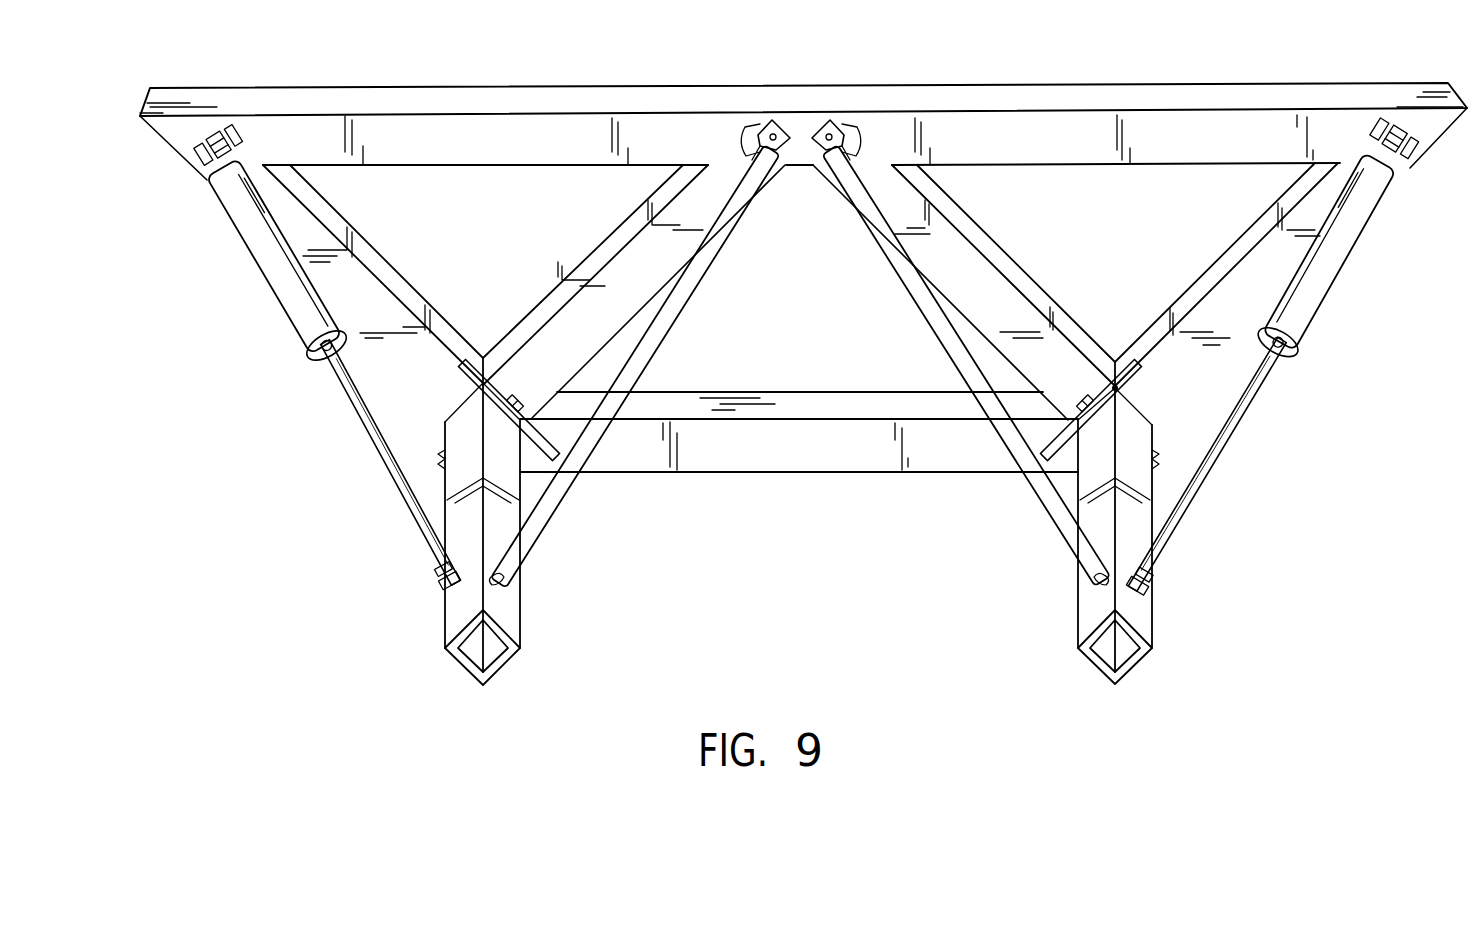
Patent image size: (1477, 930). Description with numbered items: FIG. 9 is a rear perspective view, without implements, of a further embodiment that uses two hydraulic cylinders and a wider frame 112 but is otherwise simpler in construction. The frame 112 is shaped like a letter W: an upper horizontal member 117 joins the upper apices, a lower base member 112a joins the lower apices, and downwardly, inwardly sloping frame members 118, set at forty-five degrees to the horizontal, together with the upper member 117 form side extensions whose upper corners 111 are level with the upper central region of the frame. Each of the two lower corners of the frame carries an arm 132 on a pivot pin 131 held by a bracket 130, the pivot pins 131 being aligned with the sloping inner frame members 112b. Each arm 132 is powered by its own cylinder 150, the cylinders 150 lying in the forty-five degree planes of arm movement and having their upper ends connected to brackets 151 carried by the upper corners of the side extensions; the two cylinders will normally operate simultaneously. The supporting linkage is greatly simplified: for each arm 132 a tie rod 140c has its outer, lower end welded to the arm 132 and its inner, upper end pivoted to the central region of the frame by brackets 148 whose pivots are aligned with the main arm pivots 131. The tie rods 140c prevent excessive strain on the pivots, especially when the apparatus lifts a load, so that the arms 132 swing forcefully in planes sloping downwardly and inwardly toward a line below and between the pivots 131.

The frame end 111 is at (170, 90).
The frame 112 is at (449, 86).
The base member 112a is at (767, 455).
The sloping inner frame member 112b is at (585, 272).
The upper horizontal member 117 is at (1193, 95).
The sloping frame member 118 is at (355, 283).
The bracket 130 is at (1112, 385).
The pivot pin 131 is at (515, 385).
The arm 132 is at (460, 604).
The tie rod 140c is at (556, 505).
The bracket 148 is at (775, 133).
The cylinder 150 is at (300, 325).
The bracket 151 is at (226, 128).